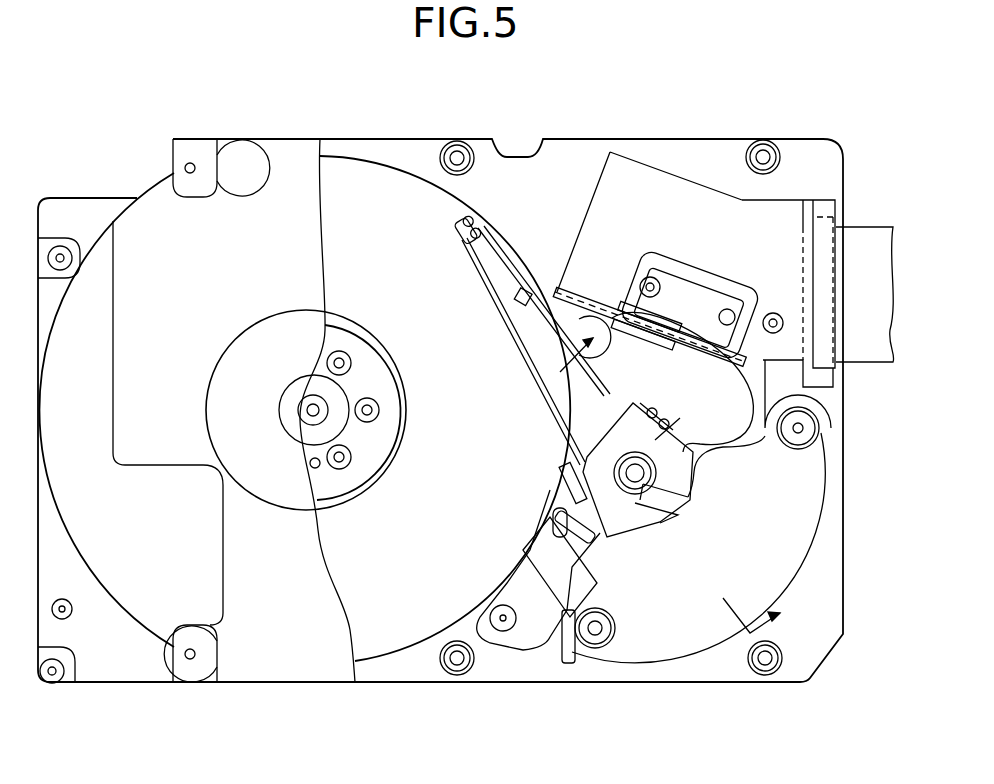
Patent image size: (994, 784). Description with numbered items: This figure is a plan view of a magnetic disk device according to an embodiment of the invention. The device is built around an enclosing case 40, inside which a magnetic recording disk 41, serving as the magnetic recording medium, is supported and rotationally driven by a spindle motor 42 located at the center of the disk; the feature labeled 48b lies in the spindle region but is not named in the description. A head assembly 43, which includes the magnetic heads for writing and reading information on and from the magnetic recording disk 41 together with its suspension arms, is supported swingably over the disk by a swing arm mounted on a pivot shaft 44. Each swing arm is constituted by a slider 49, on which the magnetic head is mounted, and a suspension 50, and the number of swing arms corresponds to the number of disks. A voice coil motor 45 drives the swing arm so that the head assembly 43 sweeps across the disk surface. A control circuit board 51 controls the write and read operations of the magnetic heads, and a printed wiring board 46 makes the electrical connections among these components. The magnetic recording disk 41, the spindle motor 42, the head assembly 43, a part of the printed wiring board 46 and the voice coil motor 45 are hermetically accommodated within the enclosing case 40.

The enclosing case 40 is at (416, 155).
The magnetic recording disk 41 is at (350, 178).
The spindle motor 42 is at (317, 442).
The head assembly 43 is at (497, 305).
The pivot shaft 44 is at (656, 471).
The voice coil motor 45 is at (666, 637).
The printed wiring board 46 is at (750, 398).
The spindle motor 48b is at (342, 477).
The slider 49 is at (456, 226).
The suspension 50 is at (572, 403).
The control circuit board 51 is at (573, 288).